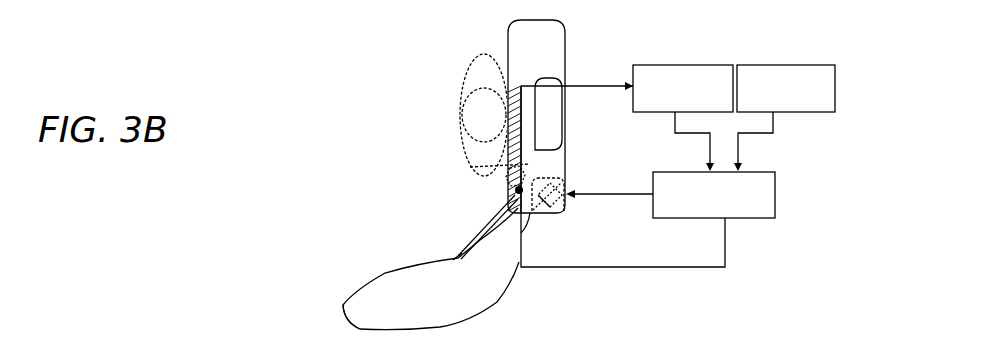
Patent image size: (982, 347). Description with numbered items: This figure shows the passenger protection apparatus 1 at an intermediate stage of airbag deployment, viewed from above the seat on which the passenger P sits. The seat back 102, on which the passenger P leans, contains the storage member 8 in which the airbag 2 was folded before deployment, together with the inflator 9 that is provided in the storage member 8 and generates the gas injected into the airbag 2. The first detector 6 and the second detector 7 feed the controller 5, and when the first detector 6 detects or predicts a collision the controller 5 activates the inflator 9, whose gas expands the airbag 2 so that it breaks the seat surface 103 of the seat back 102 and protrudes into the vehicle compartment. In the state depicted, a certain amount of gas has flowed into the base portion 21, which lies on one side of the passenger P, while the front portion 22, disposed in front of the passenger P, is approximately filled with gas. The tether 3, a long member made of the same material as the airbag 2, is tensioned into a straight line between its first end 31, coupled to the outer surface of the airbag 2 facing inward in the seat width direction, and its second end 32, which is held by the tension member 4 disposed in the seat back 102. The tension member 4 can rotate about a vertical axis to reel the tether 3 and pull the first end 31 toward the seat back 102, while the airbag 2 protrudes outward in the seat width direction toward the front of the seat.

The passenger protection apparatus 1 is at (588, 212).
The airbag 2 is at (334, 292).
The tether 3 is at (489, 225).
The tension member 4 is at (530, 164).
The controller 5 is at (776, 191).
The first detector 6 is at (803, 65).
The second detector 7 is at (706, 65).
The storage member 8 is at (568, 183).
The inflator 9 is at (568, 176).
The base portion 21 is at (531, 222).
The front portion 22 is at (352, 323).
The first end 31 is at (456, 256).
The second end 32 is at (507, 189).
The seat back 102 is at (572, 50).
The seat surface 103 is at (507, 34).
The passenger P is at (476, 56).